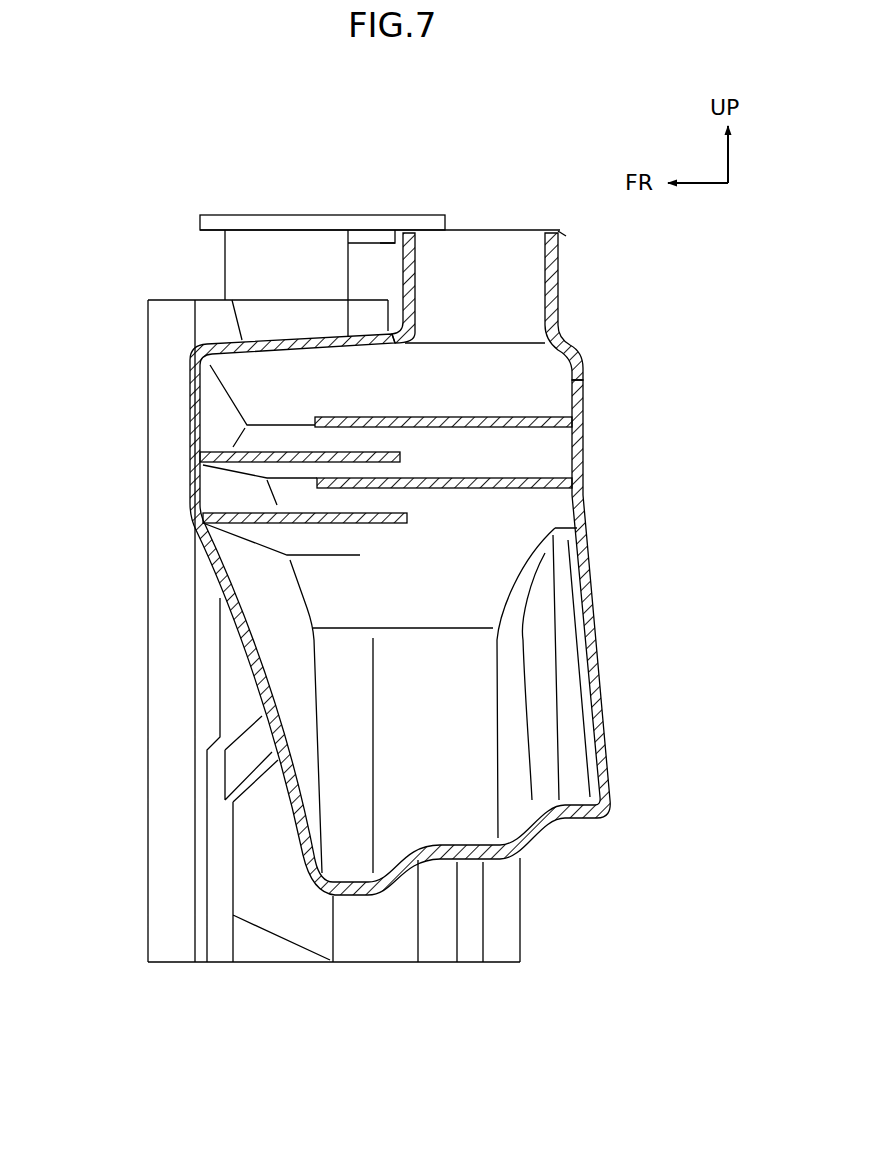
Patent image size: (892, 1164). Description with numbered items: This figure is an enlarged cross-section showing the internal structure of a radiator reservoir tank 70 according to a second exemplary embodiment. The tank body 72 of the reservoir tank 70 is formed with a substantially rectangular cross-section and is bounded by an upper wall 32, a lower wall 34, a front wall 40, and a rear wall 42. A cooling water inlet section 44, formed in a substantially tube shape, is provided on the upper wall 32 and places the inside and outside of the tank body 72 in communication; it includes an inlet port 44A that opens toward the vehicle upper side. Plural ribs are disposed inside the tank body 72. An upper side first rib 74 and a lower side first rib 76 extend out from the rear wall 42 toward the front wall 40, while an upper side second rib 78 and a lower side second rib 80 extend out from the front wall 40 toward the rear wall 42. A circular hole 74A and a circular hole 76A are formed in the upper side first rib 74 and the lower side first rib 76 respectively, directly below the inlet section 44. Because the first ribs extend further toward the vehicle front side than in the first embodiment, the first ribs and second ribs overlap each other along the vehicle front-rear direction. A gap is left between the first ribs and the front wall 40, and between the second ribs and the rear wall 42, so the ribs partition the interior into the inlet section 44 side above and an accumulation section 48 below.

The upper wall 32 is at (298, 340).
The lower wall 34 is at (437, 866).
The front wall 40 is at (190, 498).
The rear wall 42 is at (422, 608).
The cooling water inlet section 44 is at (453, 257).
The inlet port 44A is at (523, 232).
The accumulation section 48 is at (453, 767).
The radiator reservoir tank 70 is at (597, 553).
The tank body 72 is at (635, 683).
The upper side first rib 74 is at (495, 374).
The circular hole 74A is at (457, 417).
The lower side first rib 76 is at (496, 433).
The circular hole 76A is at (458, 478).
The upper side second rib 78 is at (267, 448).
The lower side second rib 80 is at (260, 526).